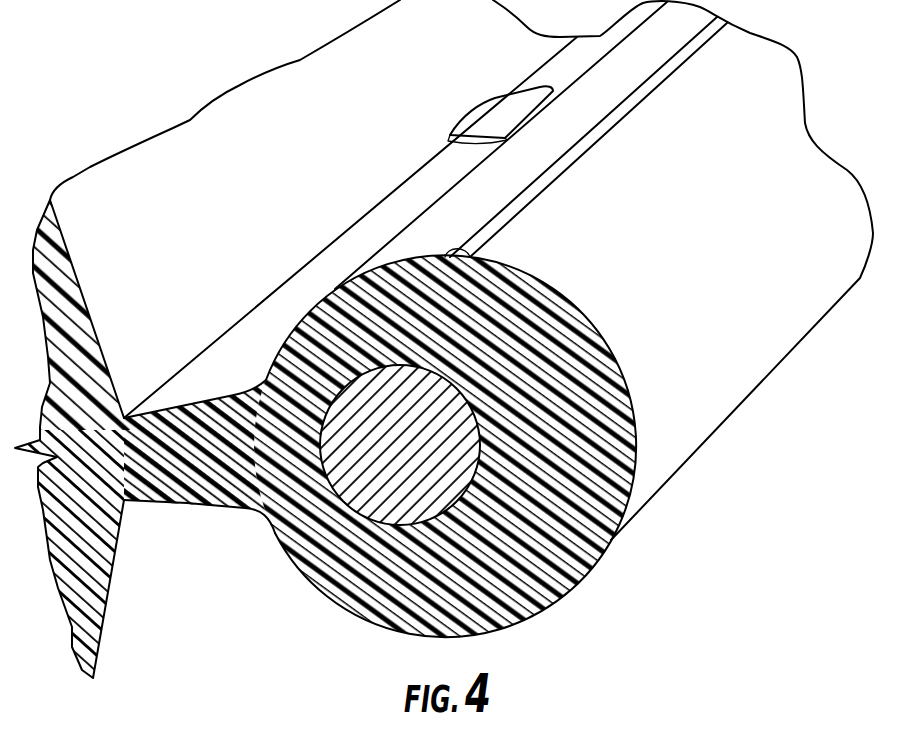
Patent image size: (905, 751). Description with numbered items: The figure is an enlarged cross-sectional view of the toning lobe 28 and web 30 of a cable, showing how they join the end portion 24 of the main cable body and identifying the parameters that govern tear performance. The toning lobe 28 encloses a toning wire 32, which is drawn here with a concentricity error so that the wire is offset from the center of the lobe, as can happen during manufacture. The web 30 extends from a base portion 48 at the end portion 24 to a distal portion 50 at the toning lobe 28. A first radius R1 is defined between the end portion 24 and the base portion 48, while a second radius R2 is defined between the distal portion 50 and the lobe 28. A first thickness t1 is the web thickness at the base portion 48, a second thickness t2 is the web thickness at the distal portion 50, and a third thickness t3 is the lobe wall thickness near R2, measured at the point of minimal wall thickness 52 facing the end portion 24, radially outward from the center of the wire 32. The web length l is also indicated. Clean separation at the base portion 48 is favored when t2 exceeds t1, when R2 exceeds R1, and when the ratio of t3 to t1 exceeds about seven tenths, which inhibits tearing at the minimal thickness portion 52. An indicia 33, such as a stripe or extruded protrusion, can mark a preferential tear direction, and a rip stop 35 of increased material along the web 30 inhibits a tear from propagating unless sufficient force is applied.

The end portion 24 is at (110, 588).
The toning lobe 28 is at (568, 298).
The web 30 is at (193, 503).
The toning wire 32 is at (440, 365).
The indicia 33 is at (637, 103).
The rip stop 35 is at (473, 127).
The base portion 48 is at (133, 508).
The distal portion 50 is at (245, 522).
The minimal wall thickness 52 is at (273, 540).
The first radius R1 is at (127, 410).
The second radius R2 is at (250, 376).
The first thickness t1 is at (129, 428).
The second thickness t2 is at (246, 405).
The third thickness t3 is at (333, 502).
The fin length l is at (131, 503).